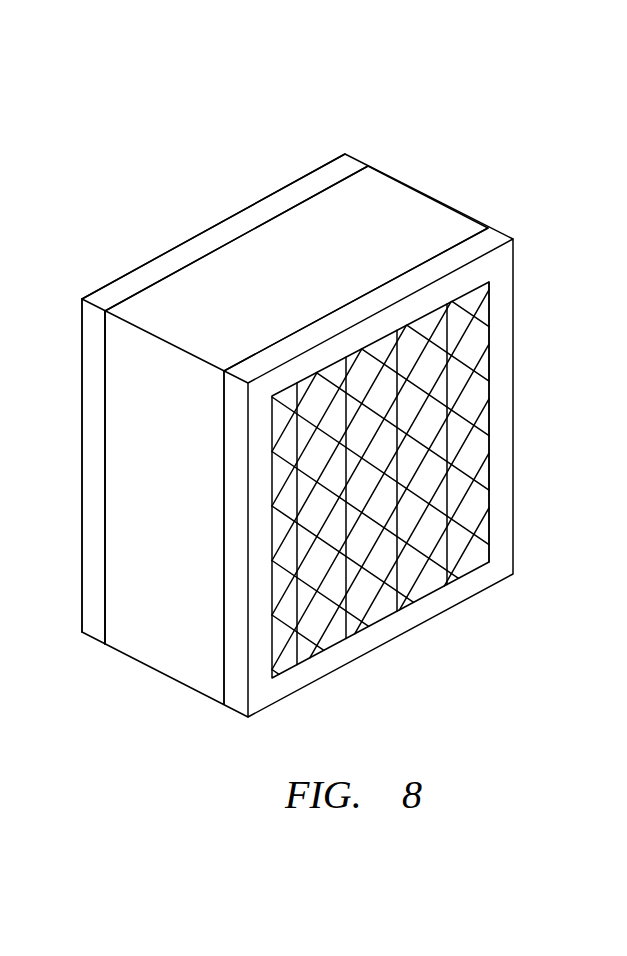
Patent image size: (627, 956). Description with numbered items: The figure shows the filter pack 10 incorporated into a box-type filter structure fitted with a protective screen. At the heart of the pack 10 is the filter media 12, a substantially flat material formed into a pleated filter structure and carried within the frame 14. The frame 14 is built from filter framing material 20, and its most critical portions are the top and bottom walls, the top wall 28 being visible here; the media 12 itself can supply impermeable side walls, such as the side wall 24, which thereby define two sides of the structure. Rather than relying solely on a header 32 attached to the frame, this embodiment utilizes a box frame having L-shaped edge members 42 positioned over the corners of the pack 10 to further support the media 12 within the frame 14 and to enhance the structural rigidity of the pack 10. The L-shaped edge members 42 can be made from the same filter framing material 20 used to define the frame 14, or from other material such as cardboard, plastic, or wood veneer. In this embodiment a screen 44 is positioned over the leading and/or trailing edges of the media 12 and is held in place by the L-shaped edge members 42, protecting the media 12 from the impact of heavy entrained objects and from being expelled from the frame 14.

The filter pack 10 is at (432, 114).
The filter media 12 is at (468, 390).
The frame 14 is at (446, 184).
The filter framing material 20 is at (160, 337).
The side wall 24 is at (142, 546).
The top wall 28 is at (305, 282).
The header 32 is at (195, 177).
The L-shaped edge members 42 is at (328, 168).
The screen 44 is at (433, 519).